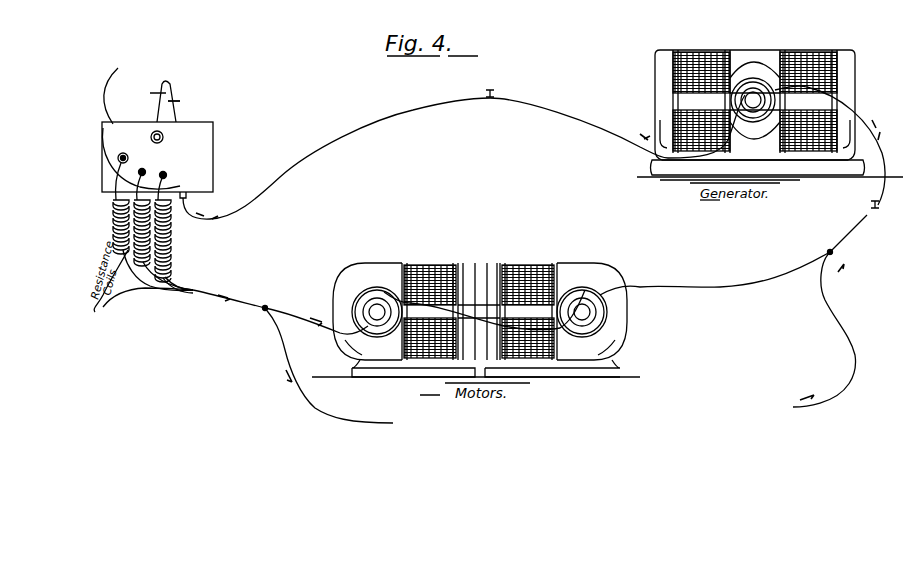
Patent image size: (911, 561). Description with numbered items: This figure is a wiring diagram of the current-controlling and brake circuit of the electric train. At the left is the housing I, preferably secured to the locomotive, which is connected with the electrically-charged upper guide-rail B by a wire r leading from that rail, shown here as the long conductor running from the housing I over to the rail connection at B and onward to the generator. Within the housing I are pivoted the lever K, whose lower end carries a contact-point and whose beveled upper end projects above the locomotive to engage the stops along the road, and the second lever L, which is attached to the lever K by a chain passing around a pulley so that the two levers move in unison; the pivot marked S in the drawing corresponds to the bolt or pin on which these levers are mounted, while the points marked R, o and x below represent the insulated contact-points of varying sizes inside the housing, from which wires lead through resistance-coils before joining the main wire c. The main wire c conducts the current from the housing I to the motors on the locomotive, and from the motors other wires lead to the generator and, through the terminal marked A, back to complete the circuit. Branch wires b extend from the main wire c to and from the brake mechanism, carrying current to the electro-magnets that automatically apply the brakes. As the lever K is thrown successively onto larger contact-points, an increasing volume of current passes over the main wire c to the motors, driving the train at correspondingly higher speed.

The housing I is at (214, 149).
The second lever L is at (160, 101).
The lever K is at (181, 100).
The switch pivot S is at (163, 137).
The resistance terminal R is at (119, 171).
The terminal o is at (145, 179).
The terminal x is at (167, 176).
The wire r is at (425, 158).
The upper guide-rail B is at (486, 105).
The generator terminal A is at (769, 169).
The main wire c is at (513, 292).
The branch wire b is at (850, 345).